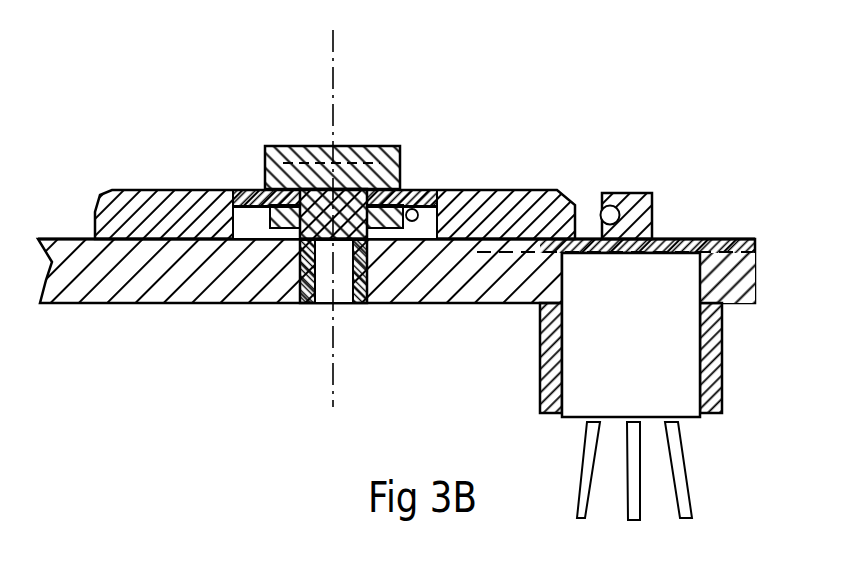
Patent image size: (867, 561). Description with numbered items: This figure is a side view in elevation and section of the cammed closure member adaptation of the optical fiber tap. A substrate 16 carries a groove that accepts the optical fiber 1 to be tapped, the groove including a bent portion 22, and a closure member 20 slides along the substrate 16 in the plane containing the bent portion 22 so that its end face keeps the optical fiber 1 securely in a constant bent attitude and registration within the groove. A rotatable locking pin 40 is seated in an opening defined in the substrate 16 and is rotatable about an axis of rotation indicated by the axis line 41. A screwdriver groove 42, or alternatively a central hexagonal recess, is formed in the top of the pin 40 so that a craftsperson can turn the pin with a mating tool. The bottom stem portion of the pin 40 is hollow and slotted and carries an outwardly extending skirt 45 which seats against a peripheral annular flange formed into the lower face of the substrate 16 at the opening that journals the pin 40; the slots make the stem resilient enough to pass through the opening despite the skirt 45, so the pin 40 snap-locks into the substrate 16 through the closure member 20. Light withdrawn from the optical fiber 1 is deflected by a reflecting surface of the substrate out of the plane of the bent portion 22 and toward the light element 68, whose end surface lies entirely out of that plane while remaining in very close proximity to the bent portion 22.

The optical fiber 1 is at (612, 203).
The substrate 16 is at (755, 267).
The closure member 20 is at (163, 187).
The bent portion 22 is at (648, 193).
The rotatable locking pin 40 is at (400, 177).
The axis of rotation 41 is at (332, 82).
The screwdriver groove 42 is at (370, 160).
The skirt 45 is at (360, 307).
The light element 68 is at (648, 353).